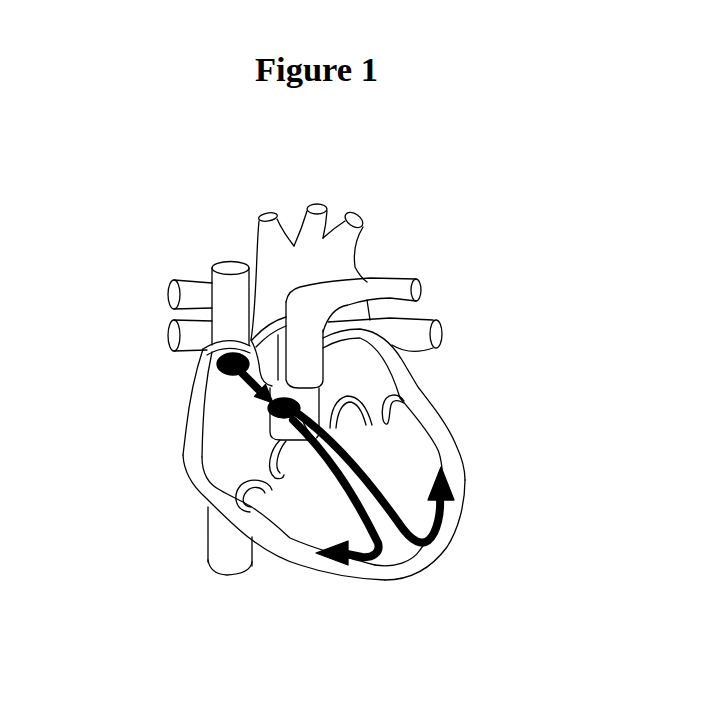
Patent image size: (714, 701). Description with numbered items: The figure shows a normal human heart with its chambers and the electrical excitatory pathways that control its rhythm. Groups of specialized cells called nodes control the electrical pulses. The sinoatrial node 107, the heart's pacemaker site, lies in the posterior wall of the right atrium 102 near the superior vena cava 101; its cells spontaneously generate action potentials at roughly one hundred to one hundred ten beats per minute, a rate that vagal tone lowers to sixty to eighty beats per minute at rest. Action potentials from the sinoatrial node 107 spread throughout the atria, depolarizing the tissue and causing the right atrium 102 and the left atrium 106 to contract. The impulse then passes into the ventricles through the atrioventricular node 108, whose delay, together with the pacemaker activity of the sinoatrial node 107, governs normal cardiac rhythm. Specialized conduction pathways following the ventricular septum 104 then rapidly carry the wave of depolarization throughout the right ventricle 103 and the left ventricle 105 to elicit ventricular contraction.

The superior vena cava 101 is at (220, 307).
The right atrium 102 is at (230, 417).
The right ventricle 103 is at (298, 517).
The ventricular septum 104 is at (360, 490).
The left ventricle 105 is at (400, 485).
The left atrium 106 is at (353, 368).
The sinoatrial node 107 is at (216, 370).
The atrioventricular node 108 is at (300, 412).